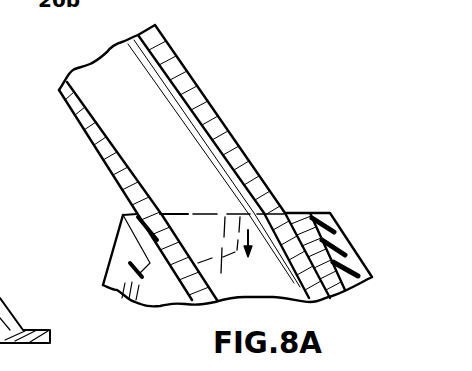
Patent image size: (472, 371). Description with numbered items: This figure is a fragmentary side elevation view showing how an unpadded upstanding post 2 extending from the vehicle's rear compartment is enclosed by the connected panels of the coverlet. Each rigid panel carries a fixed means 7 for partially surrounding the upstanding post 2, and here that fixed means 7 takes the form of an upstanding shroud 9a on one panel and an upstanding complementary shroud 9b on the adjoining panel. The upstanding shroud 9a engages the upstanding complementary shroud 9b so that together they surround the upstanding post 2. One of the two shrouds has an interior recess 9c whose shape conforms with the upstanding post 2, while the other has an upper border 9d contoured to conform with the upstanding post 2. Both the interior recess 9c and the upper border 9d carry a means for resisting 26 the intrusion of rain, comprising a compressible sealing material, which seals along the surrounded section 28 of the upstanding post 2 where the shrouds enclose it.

The upstanding post 2 is at (199, 88).
The fixed means for partially surrounding one of the at least one upstanding post 7 is at (335, 222).
The upstanding shroud 9a is at (116, 268).
The upstanding complementary shroud 9b is at (358, 253).
The interior recess 9c is at (282, 182).
The upper border 9d is at (125, 215).
The means for resisting the intrusion of rain 26 is at (296, 212).
The surrounded section 28 is at (372, 190).